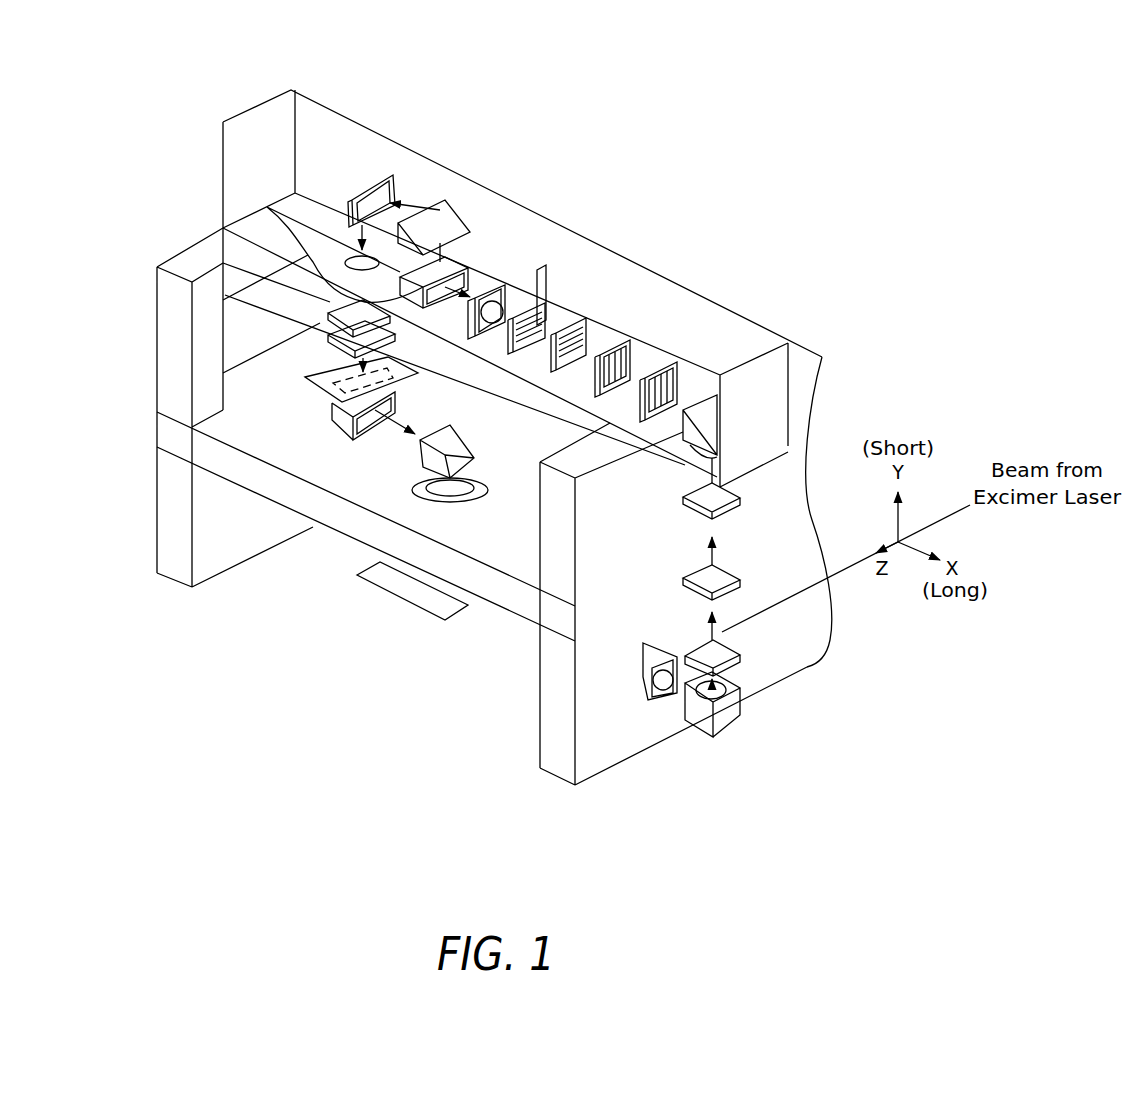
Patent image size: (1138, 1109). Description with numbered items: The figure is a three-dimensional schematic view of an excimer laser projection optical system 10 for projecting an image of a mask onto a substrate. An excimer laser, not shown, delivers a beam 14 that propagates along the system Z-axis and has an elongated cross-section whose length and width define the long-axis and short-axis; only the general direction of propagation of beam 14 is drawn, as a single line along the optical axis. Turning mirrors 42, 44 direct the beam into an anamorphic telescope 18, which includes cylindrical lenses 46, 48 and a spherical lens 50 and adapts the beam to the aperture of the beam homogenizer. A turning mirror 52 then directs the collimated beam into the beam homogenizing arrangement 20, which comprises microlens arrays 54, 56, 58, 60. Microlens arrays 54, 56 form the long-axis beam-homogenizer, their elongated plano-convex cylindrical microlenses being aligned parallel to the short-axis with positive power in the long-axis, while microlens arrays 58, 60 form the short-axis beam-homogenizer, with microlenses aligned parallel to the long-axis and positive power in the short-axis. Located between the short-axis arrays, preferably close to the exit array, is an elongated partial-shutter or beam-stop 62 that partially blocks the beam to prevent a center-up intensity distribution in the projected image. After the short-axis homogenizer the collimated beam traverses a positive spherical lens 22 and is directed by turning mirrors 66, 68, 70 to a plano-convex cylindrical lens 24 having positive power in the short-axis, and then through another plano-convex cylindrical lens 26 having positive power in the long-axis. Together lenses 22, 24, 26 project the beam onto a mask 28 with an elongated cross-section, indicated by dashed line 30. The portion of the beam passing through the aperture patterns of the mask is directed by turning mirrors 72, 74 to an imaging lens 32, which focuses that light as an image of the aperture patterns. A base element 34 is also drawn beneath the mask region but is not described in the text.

The optical system 10 is at (350, 775).
The beam 14 is at (942, 522).
The anamorphic telescope 18 is at (768, 627).
The beam homogenizing arrangement 20 is at (620, 283).
The spherical lens 22 is at (496, 298).
The plano-convex cylindrical lens 24 is at (333, 315).
The plano-convex cylindrical lens 26 is at (327, 353).
The mask 28 is at (302, 395).
The dashed line 30 is at (330, 407).
The imaging lens 32 is at (420, 483).
The base plate 34 is at (427, 605).
The turning mirror 42 is at (643, 678).
The turning mirror 44 is at (707, 730).
The cylindrical lens 46 is at (720, 658).
The cylindrical lens 48 is at (693, 577).
The spherical lens 50 is at (693, 497).
The turning mirror 52 is at (705, 417).
The microlens array 54 is at (674, 364).
The microlens array 56 is at (633, 340).
The microlens array 58 is at (576, 318).
The microlens array 60 is at (528, 303).
The beam-stop 62 is at (554, 273).
The turning mirror 66 is at (267, 207).
The turning mirror 68 is at (442, 212).
The turning mirror 70 is at (350, 203).
The turning mirror 72 is at (353, 433).
The turning mirror 74 is at (460, 488).